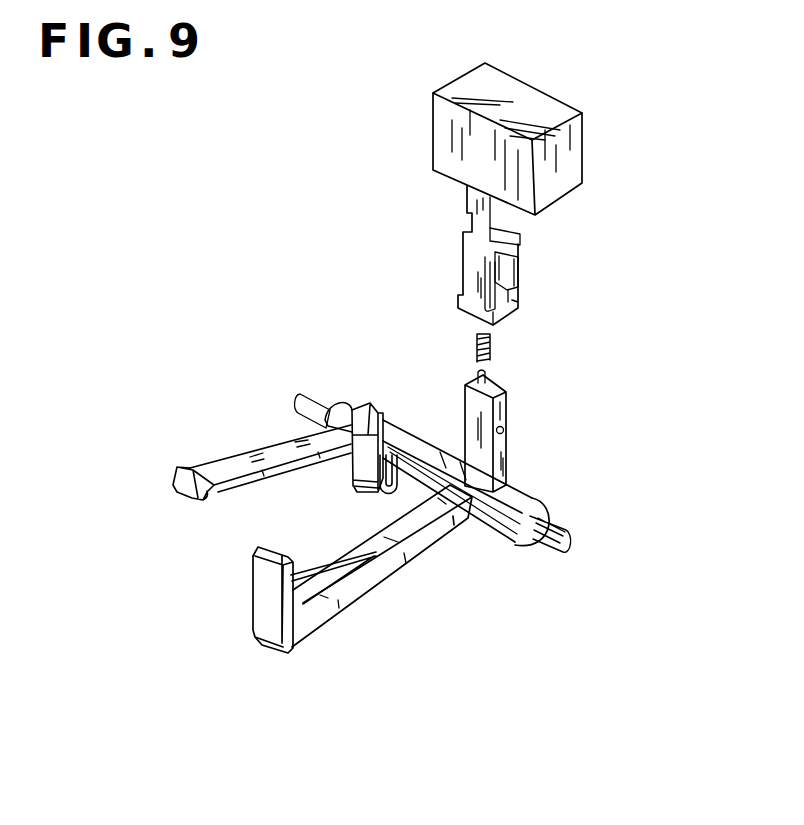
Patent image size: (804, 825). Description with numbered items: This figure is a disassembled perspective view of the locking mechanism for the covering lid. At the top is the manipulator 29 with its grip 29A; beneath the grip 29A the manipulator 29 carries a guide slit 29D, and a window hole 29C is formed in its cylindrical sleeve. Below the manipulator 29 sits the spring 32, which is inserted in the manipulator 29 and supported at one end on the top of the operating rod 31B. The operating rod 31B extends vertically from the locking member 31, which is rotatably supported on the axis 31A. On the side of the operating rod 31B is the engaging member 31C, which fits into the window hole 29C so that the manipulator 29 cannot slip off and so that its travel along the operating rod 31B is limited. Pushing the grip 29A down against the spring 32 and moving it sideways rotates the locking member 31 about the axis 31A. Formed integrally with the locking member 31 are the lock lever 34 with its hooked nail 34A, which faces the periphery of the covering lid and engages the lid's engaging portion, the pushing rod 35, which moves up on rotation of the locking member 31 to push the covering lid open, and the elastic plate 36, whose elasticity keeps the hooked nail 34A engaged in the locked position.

The manipulator 29 is at (458, 272).
The grip 29A is at (560, 172).
The window hole 29C is at (519, 268).
The guide slit 29D is at (512, 224).
The locking member 31 is at (492, 527).
The axis 31A is at (562, 527).
The operating rod 31B is at (507, 462).
The engaging member 31C is at (504, 428).
The spring 32 is at (493, 347).
The lock lever 34 is at (367, 457).
The hooked nail 34A is at (366, 400).
The pushing rod 35 is at (270, 592).
The elastic plate 36 is at (233, 470).